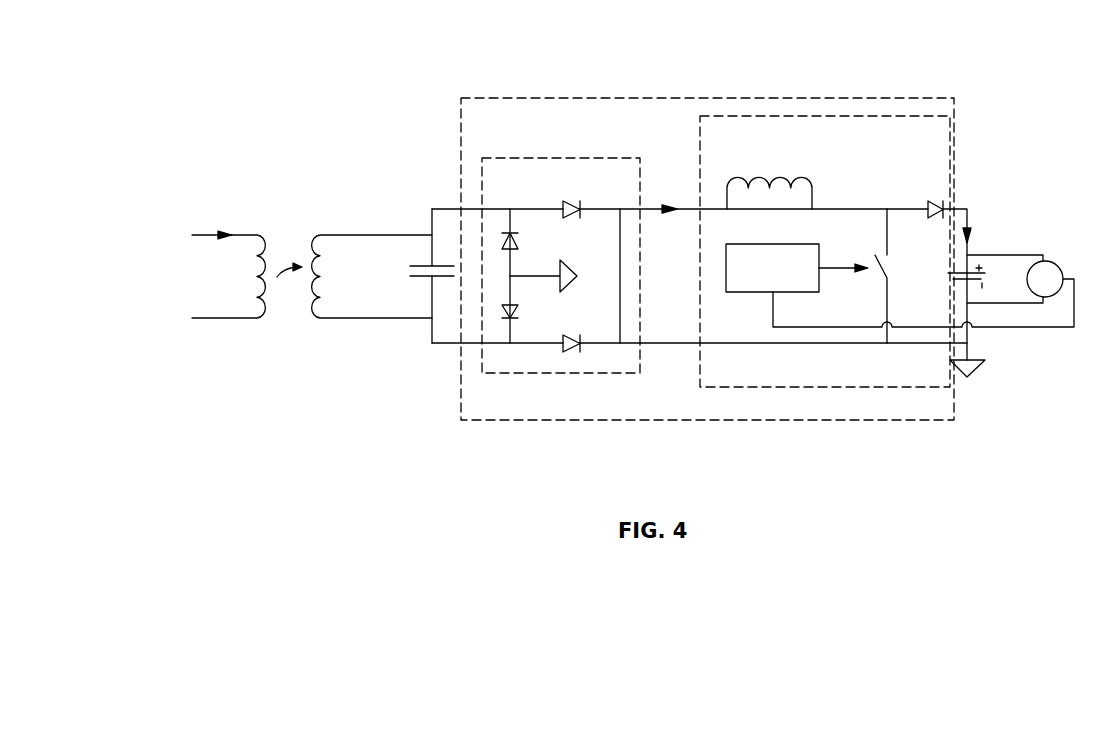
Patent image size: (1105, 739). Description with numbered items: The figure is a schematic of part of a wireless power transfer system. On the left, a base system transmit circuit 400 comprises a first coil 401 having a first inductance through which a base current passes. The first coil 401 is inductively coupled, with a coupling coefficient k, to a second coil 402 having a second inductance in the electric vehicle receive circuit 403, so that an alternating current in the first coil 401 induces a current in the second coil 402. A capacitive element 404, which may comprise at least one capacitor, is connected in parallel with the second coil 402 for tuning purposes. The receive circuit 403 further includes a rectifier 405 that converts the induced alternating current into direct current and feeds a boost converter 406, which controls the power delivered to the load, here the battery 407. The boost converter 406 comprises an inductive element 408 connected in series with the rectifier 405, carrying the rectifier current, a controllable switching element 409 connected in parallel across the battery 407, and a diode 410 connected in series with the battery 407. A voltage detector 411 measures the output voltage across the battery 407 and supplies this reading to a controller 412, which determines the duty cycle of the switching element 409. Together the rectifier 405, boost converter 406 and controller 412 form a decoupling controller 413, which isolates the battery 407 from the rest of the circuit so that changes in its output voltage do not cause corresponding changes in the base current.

The base system transmit circuit 400 is at (176, 180).
The first coil 401 is at (257, 322).
The second coil 402 is at (320, 322).
The electric vehicle receive circuit 403 is at (434, 66).
The capacitive element 404 is at (418, 278).
The rectifier 405 is at (557, 157).
The boost converter 406 is at (700, 123).
The battery 407 is at (990, 272).
The inductive element 408 is at (813, 187).
The controllable switching element 409 is at (883, 280).
The diode 410 is at (933, 200).
The voltage detector 411 is at (1054, 266).
The controller 412 is at (775, 243).
The decoupling controller 413 is at (673, 97).